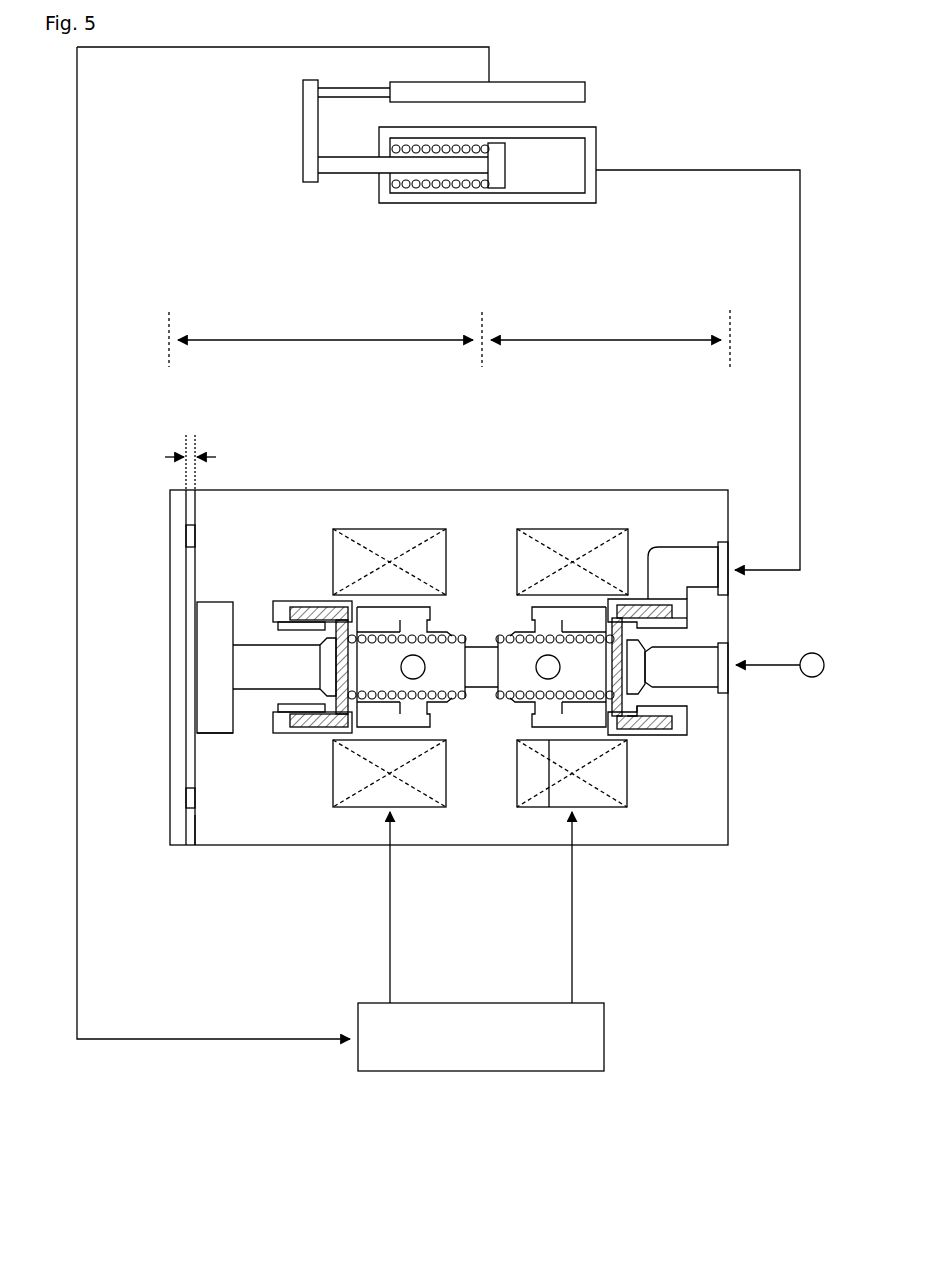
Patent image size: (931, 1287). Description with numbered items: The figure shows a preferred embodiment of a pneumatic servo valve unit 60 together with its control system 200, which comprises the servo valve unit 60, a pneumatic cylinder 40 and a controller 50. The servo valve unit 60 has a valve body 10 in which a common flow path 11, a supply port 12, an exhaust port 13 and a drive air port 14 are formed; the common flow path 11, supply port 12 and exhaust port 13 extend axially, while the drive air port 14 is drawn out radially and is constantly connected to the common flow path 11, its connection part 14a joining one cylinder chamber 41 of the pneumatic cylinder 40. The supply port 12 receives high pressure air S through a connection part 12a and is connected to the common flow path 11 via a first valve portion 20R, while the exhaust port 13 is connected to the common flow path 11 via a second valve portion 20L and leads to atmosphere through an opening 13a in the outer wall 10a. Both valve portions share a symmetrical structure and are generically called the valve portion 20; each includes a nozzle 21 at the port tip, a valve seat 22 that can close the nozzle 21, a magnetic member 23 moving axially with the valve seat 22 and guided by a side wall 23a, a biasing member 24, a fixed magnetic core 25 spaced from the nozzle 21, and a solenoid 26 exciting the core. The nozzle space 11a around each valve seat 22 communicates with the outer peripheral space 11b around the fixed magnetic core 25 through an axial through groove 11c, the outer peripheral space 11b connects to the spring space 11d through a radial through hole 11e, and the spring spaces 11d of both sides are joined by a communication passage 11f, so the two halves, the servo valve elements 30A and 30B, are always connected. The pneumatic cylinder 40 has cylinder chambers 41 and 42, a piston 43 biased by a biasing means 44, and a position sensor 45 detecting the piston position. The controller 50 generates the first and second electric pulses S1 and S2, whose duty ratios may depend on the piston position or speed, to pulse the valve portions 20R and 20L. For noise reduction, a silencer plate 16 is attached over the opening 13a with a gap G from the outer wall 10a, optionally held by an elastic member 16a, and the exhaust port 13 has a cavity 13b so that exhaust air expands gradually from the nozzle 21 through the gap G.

The control system 200 is at (727, 68).
The pneumatic cylinder 40 is at (435, 168).
The cylinder chamber 41 is at (547, 190).
The cylinder chamber 42 is at (450, 190).
The piston 43 is at (497, 190).
The biasing means 44 is at (403, 188).
The position sensor 45 is at (587, 92).
The servo valve element 30A is at (610, 337).
The servo valve element 30B is at (325, 335).
The servo valve unit 60 is at (462, 651).
The valve body 10 is at (273, 507).
The outer wall 10a is at (194, 828).
The common flow path 11 is at (481, 646).
The nozzle space 11a is at (332, 628).
The outer peripheral space 11b is at (609, 613).
The through groove 11c is at (678, 622).
The spring space 11d is at (513, 653).
The through hole 11e is at (550, 618).
The communication passage 11f is at (483, 672).
The supply port 12 is at (705, 680).
The connection part 12a is at (727, 684).
The exhaust port 13 is at (218, 765).
The opening 13a is at (190, 732).
The cavity 13b is at (215, 646).
The drive air port 14 is at (708, 560).
The connection part 14a is at (725, 580).
The silencer plate 16 is at (170, 500).
The elastic member 16a is at (186, 537).
The gap G is at (200, 462).
The valve portion 20 is at (438, 832).
The second valve portion 20L is at (322, 825).
The first valve portion 20R is at (532, 825).
The nozzle 21 is at (657, 720).
The valve seat 22 is at (634, 714).
The magnetic member 23 is at (618, 730).
The side wall 23a is at (655, 698).
The biasing member 24 is at (549, 698).
The fixed magnetic core 25 is at (593, 718).
The solenoid 26 is at (567, 545).
The controller 50 is at (472, 987).
The first electric pulse S1 is at (562, 986).
The second electric pulse S2 is at (380, 986).
The high pressure air S is at (780, 665).